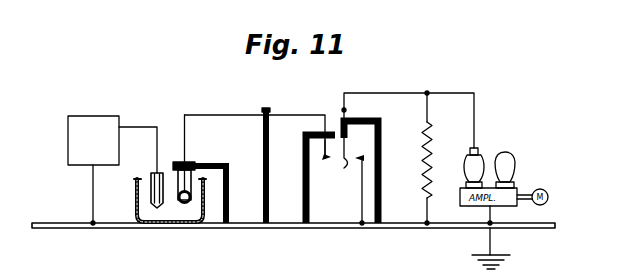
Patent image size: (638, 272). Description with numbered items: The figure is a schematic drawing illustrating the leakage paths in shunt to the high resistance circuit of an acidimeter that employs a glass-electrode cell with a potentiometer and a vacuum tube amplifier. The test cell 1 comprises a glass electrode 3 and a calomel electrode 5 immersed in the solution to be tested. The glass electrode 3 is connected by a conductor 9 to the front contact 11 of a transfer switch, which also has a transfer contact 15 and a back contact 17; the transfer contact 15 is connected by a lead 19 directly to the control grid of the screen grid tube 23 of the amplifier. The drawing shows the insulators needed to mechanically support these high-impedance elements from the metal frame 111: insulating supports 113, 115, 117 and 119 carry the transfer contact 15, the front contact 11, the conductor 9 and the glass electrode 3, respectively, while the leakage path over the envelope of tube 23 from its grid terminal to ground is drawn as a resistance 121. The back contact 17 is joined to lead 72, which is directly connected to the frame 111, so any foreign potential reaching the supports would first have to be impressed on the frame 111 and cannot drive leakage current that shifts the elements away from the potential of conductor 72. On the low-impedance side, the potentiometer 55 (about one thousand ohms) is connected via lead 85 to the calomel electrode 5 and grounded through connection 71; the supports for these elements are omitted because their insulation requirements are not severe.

The test cell 1 is at (168, 129).
The glass electrode 3 is at (197, 192).
The calomel electrode 5 is at (150, 176).
The conductor 9 is at (232, 114).
The front contact 11 is at (329, 159).
The transfer contact 15 is at (339, 138).
The back contact 17 is at (360, 184).
The lead 19 is at (410, 98).
The screen grid tube 23 is at (465, 166).
The potentiometer 55 is at (87, 122).
The ground conductor 71 is at (93, 191).
The lead 72 is at (491, 217).
The lead 85 is at (145, 126).
The metal frame 111 is at (344, 229).
The insulating support 113 is at (380, 150).
The insulating support 115 is at (314, 134).
The insulating support 117 is at (270, 106).
The insulating support 119 is at (230, 197).
The resistance 121 is at (431, 141).